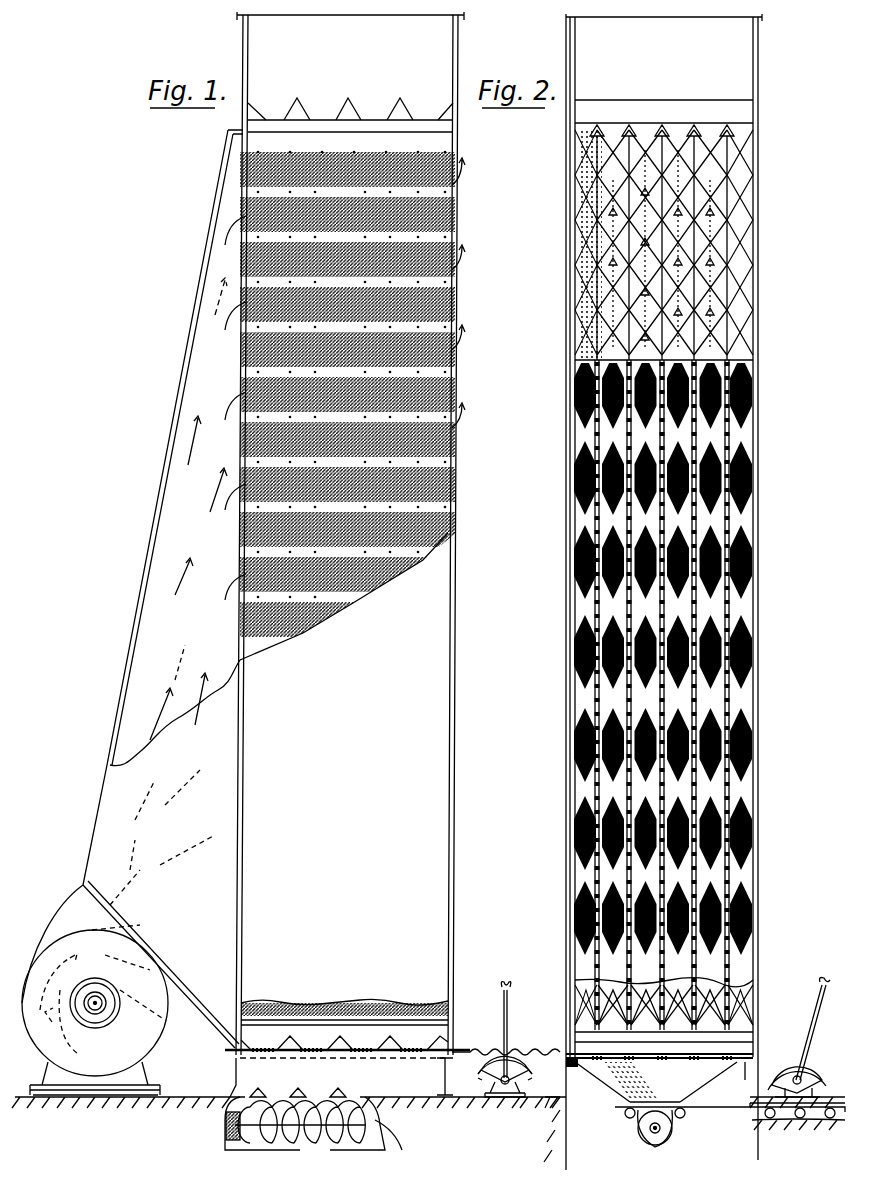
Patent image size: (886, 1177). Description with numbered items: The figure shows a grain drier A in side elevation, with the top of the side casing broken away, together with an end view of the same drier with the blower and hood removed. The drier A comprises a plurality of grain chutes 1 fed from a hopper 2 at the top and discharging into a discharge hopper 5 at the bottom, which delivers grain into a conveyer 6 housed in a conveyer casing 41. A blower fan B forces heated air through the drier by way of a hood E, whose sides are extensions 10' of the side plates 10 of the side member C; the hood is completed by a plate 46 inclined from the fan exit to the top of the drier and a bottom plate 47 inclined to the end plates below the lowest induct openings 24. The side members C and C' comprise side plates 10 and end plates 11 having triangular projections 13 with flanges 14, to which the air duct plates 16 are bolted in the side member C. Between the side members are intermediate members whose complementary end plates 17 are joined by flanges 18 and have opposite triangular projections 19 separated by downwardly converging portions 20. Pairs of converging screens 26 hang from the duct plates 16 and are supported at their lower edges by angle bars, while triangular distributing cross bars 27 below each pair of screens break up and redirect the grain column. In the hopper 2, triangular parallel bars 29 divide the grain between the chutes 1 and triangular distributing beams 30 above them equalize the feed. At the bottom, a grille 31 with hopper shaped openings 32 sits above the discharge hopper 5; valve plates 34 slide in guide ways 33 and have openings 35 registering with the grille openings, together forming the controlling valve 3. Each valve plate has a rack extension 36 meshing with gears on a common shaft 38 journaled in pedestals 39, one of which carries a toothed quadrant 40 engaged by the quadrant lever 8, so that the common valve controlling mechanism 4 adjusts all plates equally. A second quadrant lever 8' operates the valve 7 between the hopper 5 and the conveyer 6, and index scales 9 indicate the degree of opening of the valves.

In FIG. 1, the grain chutes 1 is at (440, 152).
In FIG. 2, the grain chutes 1 is at (731, 132).
In FIG. 1, the hopper 2 is at (350, 88).
In FIG. 2, the hopper 2 is at (665, 55).
In FIG. 1, the controlling valve 3 is at (450, 1048).
In FIG. 1, the valve controlling mechanism 4 is at (510, 1052).
In FIG. 1, the discharge hopper 5 is at (395, 1083).
In FIG. 2, the discharge hopper 5 is at (632, 1112).
In FIG. 1, the conveyer 6 is at (312, 1115).
In FIG. 2, the conveyer 6 is at (636, 1127).
In FIG. 2, the valve 7 is at (712, 1108).
In FIG. 1, the quadrant lever 8 is at (494, 1030).
In FIG. 2, the quadrant lever 8' is at (805, 1029).
In FIG. 1, the index scales 9 is at (524, 1063).
In FIG. 2, the index scales 9 is at (790, 1062).
In FIG. 1, the side plates 10 is at (471, 816).
In FIG. 2, the side plates 10 is at (660, 784).
In FIG. 1, the side extensions 10' is at (151, 649).
In FIG. 2, the end plates 11 is at (572, 712).
In FIG. 2, the triangular projections 13 is at (578, 404).
In FIG. 2, the flanges 14 is at (578, 505).
In FIG. 1, the air duct plates 16 is at (352, 395).
In FIG. 2, the air duct plates 16 is at (578, 168).
In FIG. 2, the end plates 17 is at (661, 703).
In FIG. 2, the flanges 18 is at (578, 370).
In FIG. 2, the triangular projections 19 is at (662, 694).
In FIG. 2, the converging portions 20 is at (582, 384).
In FIG. 2, the induct openings 24 is at (578, 470).
In FIG. 1, the screens 26 is at (246, 168).
In FIG. 2, the screens 26 is at (585, 155).
In FIG. 2, the distributing cross bar 27 is at (664, 242).
In FIG. 1, the triangular parallel bars 29 is at (323, 128).
In FIG. 2, the triangular parallel bars 29 is at (622, 135).
In FIG. 1, the triangular distributing beams 30 is at (262, 112).
In FIG. 2, the triangular distributing beams 30 is at (655, 110).
In FIG. 1, the grille 31 is at (332, 1030).
In FIG. 2, the grille 31 is at (664, 1042).
In FIG. 1, the hopper shaped openings 32 is at (418, 1046).
In FIG. 2, the guide ways 33 is at (612, 1058).
In FIG. 1, the valve plate 34 is at (232, 1052).
In FIG. 2, the valve plate 34 is at (722, 1058).
In FIG. 1, the openings 35 is at (420, 1054).
In FIG. 1, the rack extension 36 is at (487, 1050).
In FIG. 1, the shaft 38 is at (493, 1077).
In FIG. 1, the pedestals 39 is at (272, 1054).
In FIG. 1, the toothed quadrant 40 is at (525, 1058).
In FIG. 2, the conveyer casing 41 is at (672, 1135).
In FIG. 1, the plate 46 is at (130, 632).
In FIG. 1, the bottom plate 47 is at (204, 1028).
In FIG. 1, the drier A is at (349, 795).
In FIG. 2, the drier A is at (585, 428).
In FIG. 1, the blower fan B is at (128, 996).
In FIG. 2, the side member C is at (546, 633).
In FIG. 1, the side member C' is at (468, 856).
In FIG. 2, the side member C' is at (771, 626).
In FIG. 1, the hood E is at (108, 790).